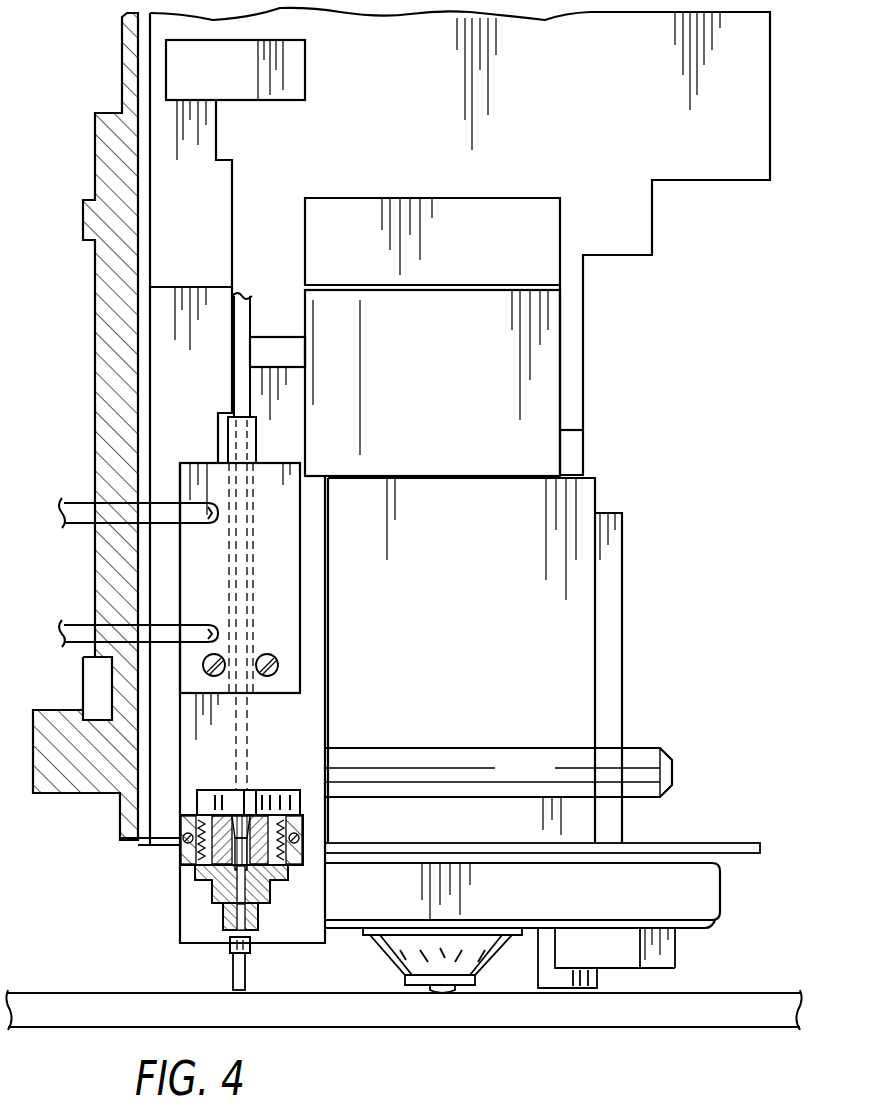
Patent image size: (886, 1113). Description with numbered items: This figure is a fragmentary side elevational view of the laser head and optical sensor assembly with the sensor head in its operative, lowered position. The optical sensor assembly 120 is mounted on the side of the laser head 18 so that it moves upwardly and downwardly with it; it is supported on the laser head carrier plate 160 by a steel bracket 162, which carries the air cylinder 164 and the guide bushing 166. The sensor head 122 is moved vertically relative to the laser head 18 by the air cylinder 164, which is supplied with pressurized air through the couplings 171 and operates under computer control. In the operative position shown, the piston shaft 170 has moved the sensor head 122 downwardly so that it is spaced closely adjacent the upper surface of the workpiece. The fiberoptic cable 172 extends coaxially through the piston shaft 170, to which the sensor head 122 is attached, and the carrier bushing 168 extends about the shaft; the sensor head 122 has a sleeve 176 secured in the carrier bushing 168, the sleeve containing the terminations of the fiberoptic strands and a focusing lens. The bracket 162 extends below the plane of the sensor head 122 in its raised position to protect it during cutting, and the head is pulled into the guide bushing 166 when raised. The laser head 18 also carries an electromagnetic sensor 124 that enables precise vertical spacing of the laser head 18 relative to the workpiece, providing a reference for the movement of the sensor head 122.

The laser head 18 is at (505, 827).
The optical sensor assembly 120 is at (168, 862).
The sensor head 122 is at (220, 963).
The electromagnetic sensor 124 is at (548, 978).
The laser head carrier plate 160 is at (650, 890).
The bracket 162 is at (318, 580).
The air cylinder 164 is at (275, 545).
The guide bushing 166 is at (267, 897).
The carrier bushing 168 is at (235, 920).
The piston shaft 170 is at (232, 440).
The couplings 171 is at (122, 513).
The fiberoptic cable 172 is at (240, 345).
The sleeve 176 is at (248, 982).